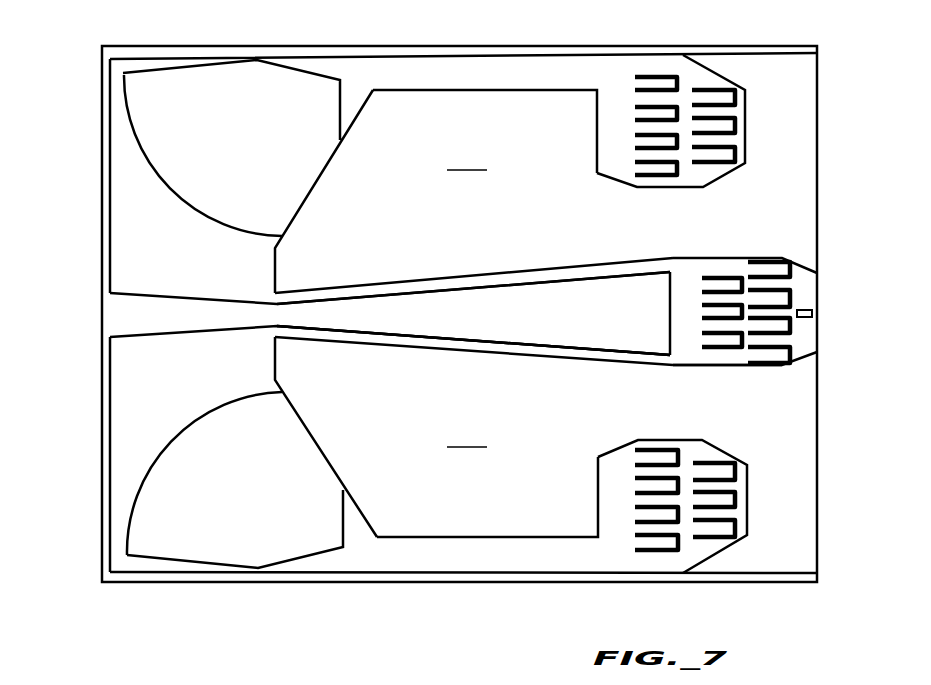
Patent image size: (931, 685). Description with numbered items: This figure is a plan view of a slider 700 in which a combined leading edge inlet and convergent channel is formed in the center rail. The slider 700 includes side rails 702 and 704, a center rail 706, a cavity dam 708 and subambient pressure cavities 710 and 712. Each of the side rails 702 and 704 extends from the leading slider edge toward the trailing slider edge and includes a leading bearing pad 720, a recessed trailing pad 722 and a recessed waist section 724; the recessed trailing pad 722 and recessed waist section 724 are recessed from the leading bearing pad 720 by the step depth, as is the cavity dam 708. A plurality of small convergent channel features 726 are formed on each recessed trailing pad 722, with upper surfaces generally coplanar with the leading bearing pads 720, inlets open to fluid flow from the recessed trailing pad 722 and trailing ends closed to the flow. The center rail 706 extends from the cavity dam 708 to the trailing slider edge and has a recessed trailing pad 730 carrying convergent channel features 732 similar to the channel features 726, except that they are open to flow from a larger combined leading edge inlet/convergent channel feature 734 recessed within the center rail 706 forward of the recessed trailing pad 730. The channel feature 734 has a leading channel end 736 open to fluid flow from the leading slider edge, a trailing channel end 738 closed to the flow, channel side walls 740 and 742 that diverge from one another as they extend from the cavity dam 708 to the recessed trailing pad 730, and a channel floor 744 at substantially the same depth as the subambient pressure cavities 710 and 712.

The slider 700 is at (98, 72).
The side rail 702 is at (208, 53).
The side rail 704 is at (210, 578).
The center rail 706 is at (757, 255).
The cavity dam 708 is at (110, 230).
The subambient pressure cavity 710 is at (485, 131).
The subambient pressure cavity 712 is at (487, 480).
The leading bearing pad 720 is at (238, 108).
The recessed trailing pad 722 is at (627, 63).
The recessed waist section 724 is at (513, 67).
The convergent channel features 726 is at (720, 92).
The recessed trailing pad 730 is at (732, 360).
The convergent channel features 732 is at (775, 345).
The combined leading edge inlet/convergent channel feature 734 is at (447, 318).
The leading channel end 736 is at (140, 315).
The trailing channel end 738 is at (667, 307).
The channel side wall 740 is at (343, 283).
The channel side wall 742 is at (342, 343).
The channel floor 744 is at (483, 330).